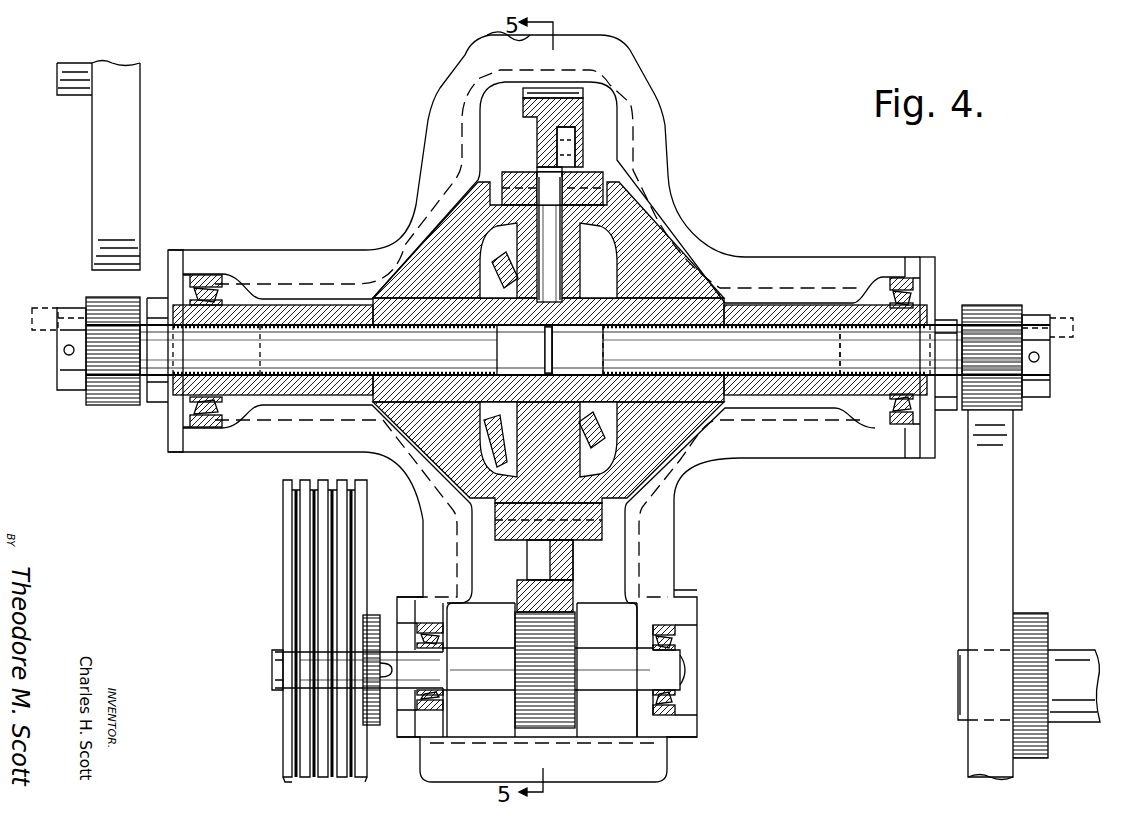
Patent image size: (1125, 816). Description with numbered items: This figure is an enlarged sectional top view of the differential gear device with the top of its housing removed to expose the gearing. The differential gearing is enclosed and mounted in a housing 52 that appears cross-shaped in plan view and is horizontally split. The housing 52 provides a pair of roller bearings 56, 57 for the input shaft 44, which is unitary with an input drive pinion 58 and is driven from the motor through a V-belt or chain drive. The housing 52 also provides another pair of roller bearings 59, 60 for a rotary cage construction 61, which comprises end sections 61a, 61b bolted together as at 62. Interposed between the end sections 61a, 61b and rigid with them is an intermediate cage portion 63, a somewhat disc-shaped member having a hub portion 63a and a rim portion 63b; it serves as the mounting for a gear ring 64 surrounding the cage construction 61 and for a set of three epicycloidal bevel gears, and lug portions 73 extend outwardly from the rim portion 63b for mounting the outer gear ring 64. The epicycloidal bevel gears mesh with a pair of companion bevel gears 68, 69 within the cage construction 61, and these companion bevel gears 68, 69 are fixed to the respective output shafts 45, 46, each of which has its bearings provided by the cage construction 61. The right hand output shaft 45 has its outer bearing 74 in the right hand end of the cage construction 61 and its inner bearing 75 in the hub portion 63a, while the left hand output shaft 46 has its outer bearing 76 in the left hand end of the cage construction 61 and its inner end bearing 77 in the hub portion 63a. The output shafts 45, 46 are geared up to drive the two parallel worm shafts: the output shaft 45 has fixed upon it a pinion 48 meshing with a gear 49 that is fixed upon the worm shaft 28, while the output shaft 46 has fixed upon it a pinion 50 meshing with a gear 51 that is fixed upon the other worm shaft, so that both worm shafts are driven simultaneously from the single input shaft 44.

The worm shaft 28 is at (1075, 650).
The input shaft 44 is at (680, 668).
The output shaft 45 is at (721, 350).
The output shaft 46 is at (568, 350).
The pinion 48 is at (985, 305).
The gear 49 is at (1013, 508).
The pinion 50 is at (112, 405).
The gear 51 is at (140, 186).
The housing 52 is at (722, 243).
The roller bearing 56 is at (675, 632).
The roller bearing 57 is at (420, 618).
The input drive pinion 58 is at (560, 640).
The roller bearing 59 is at (905, 275).
The roller bearing 60 is at (197, 275).
The rotary cage construction 61 is at (509, 166).
The end section 61a is at (795, 303).
The end section 61b is at (365, 303).
The bolt 62 is at (605, 195).
The intermediate cage portion 63 is at (585, 175).
The hub portion 63a is at (503, 440).
The rim portion 63b is at (515, 542).
The gear ring 64 is at (585, 92).
The companion bevel gear 68 is at (622, 418).
The companion bevel gear 69 is at (497, 288).
The lug portion 73 is at (578, 140).
The outer bearing 74 is at (875, 325).
The inner bearing 75 is at (572, 330).
The outer bearing 76 is at (215, 330).
The inner end bearing 77 is at (525, 330).